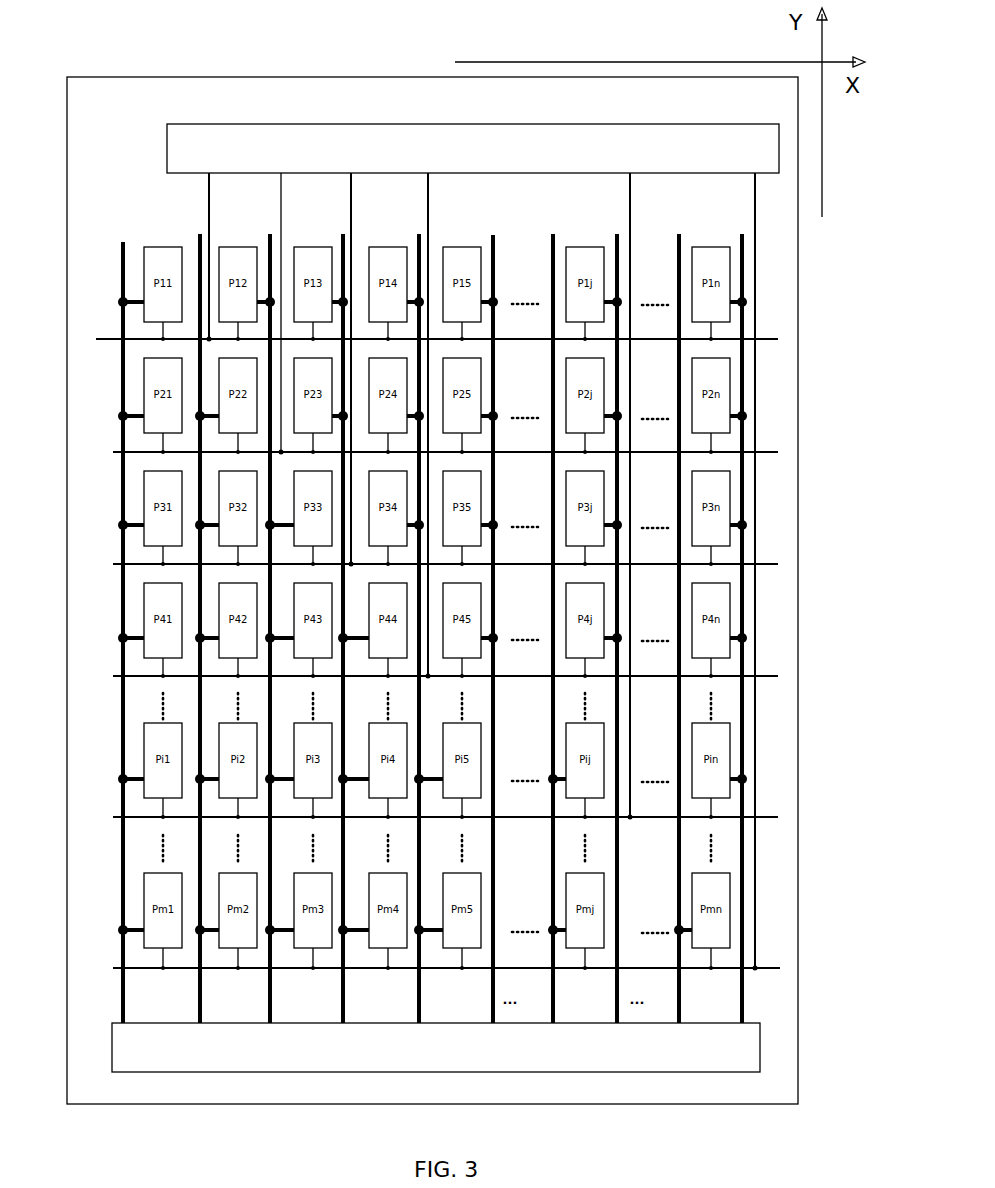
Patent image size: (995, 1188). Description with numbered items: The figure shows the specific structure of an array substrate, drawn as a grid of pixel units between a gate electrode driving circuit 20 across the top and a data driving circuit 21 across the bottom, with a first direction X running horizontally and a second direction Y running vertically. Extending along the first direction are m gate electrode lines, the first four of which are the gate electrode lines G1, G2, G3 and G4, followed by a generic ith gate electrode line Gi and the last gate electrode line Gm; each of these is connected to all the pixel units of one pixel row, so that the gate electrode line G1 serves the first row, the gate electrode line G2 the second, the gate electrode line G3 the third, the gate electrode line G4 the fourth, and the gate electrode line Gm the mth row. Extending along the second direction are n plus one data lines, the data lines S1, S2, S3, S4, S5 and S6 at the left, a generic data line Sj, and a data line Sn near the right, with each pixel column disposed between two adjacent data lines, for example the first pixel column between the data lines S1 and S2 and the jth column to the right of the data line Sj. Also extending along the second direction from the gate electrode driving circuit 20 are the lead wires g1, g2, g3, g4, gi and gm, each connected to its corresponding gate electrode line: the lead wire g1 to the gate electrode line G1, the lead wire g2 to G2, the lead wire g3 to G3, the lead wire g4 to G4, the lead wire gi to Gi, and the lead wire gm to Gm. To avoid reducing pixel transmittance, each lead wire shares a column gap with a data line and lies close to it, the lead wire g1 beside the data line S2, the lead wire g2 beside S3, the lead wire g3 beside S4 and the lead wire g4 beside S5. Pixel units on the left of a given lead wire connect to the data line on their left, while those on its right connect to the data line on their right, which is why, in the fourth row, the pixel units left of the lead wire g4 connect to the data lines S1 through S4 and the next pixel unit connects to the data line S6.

The gate electrode driving circuit 20 is at (167, 131).
The data driving circuit 21 is at (313, 1072).
The data line S1 is at (108, 632).
The data line S2 is at (184, 628).
The data line S3 is at (253, 628).
The data line S4 is at (325, 628).
The data line S5 is at (403, 628).
The data line S6 is at (475, 629).
The data line Sj is at (541, 628).
The data line Sn is at (666, 628).
The lead wire g1 is at (197, 257).
The lead wire g2 is at (267, 314).
The lead wire g3 is at (337, 370).
The lead wire g4 is at (414, 426).
The lead wire gi is at (619, 496).
The lead wire gm is at (735, 572).
The gate electrode line G1 is at (431, 323).
The gate electrode line G2 is at (429, 447).
The gate electrode line G3 is at (429, 564).
The gate electrode line G4 is at (429, 675).
The gate electrode line Gi is at (431, 817).
The gate electrode line Gm is at (428, 969).